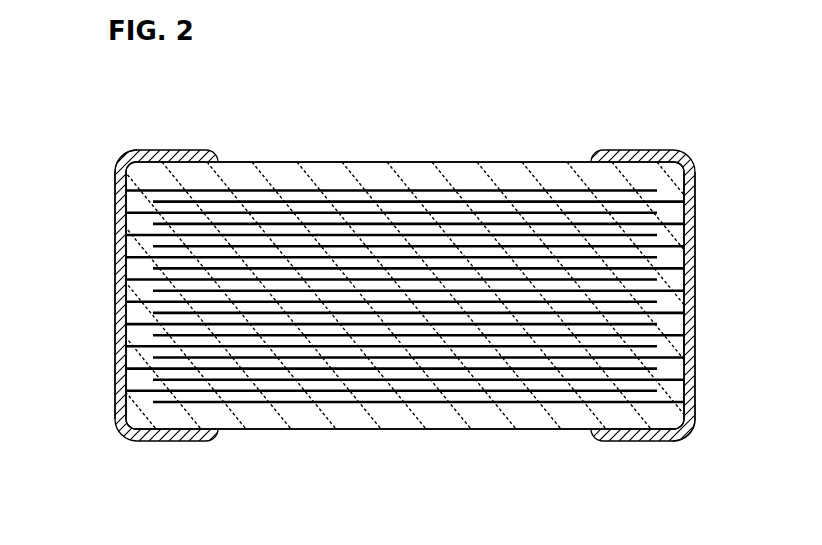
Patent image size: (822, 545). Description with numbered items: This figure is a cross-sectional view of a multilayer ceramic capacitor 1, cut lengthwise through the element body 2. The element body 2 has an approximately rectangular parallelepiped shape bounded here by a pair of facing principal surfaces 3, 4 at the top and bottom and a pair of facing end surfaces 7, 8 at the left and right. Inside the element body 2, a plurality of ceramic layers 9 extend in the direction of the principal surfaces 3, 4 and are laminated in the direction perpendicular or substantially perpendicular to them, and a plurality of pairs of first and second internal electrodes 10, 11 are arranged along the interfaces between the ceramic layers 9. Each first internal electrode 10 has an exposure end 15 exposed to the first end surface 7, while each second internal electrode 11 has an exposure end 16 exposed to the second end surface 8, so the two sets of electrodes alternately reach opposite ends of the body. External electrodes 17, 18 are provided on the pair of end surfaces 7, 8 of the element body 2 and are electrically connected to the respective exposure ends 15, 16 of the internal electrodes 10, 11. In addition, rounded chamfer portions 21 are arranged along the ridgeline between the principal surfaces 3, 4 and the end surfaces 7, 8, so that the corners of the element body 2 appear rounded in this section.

The multilayer ceramic capacitor 1 is at (218, 78).
The element body 2 is at (525, 158).
The principal surface 3 is at (398, 162).
The principal surface 4 is at (398, 430).
The first end surface 7 is at (116, 287).
The second end surface 8 is at (684, 258).
The ceramic layer 9 is at (310, 385).
The first internal electrode 10 is at (405, 296).
The second internal electrode 11 is at (507, 385).
The exposure end 15 is at (126, 233).
The exposure end 16 is at (684, 220).
The external electrode 17 is at (126, 353).
The external electrode 18 is at (695, 327).
The rounded chamfer portion 21 is at (137, 153).